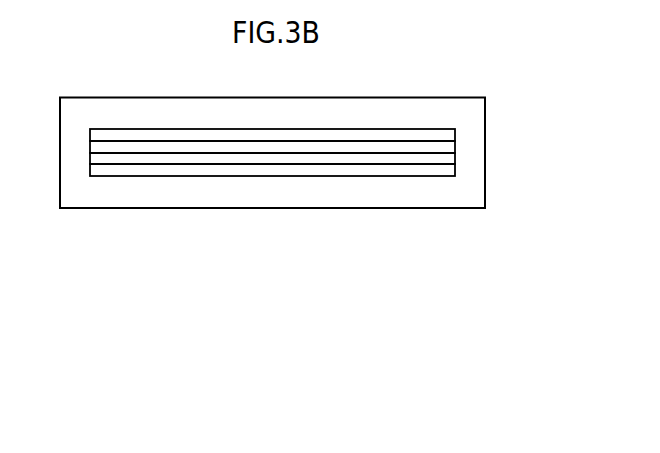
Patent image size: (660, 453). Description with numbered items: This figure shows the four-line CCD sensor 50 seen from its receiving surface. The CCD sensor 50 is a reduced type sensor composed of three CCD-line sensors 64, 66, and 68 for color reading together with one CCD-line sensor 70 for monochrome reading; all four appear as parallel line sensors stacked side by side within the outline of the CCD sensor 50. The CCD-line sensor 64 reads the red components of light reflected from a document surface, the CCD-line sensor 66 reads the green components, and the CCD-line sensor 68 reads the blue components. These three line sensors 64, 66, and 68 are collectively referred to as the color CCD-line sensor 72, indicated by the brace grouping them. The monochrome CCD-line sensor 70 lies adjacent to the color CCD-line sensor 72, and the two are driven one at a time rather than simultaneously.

The CCD sensor 50 is at (470, 98).
The CCD-line sensor 64 is at (455, 133).
The CCD-line sensor 66 is at (455, 146).
The CCD-line sensor 68 is at (455, 158).
The monochrome CCD-line sensor 70 is at (455, 170).
The color CCD-line sensor 72 is at (355, 137).